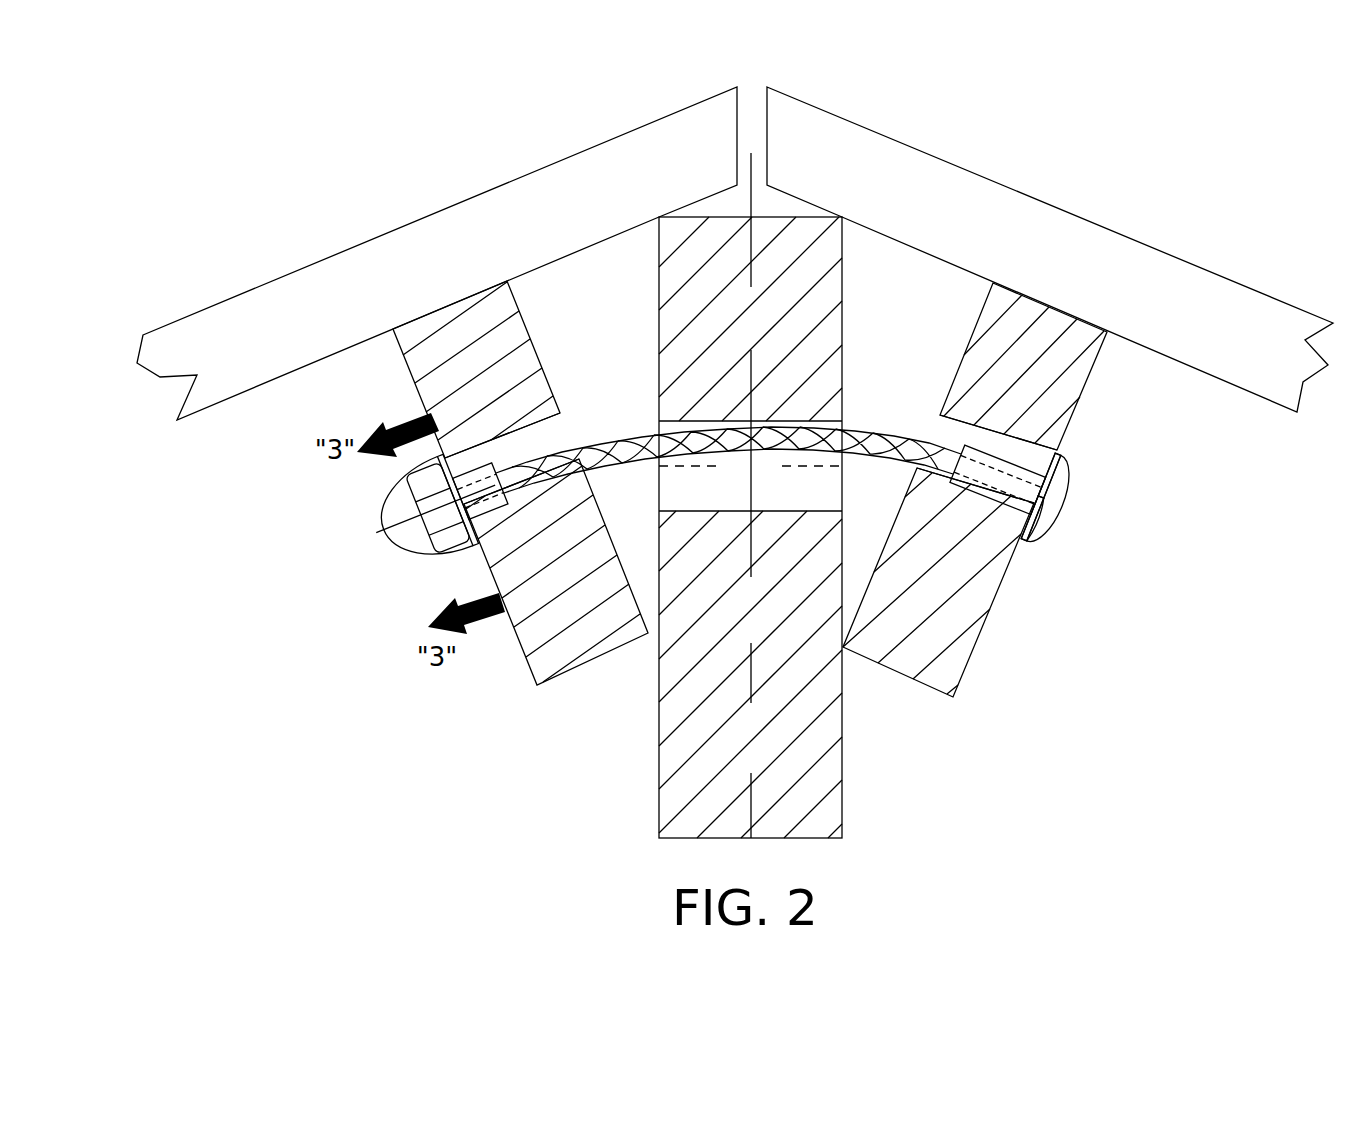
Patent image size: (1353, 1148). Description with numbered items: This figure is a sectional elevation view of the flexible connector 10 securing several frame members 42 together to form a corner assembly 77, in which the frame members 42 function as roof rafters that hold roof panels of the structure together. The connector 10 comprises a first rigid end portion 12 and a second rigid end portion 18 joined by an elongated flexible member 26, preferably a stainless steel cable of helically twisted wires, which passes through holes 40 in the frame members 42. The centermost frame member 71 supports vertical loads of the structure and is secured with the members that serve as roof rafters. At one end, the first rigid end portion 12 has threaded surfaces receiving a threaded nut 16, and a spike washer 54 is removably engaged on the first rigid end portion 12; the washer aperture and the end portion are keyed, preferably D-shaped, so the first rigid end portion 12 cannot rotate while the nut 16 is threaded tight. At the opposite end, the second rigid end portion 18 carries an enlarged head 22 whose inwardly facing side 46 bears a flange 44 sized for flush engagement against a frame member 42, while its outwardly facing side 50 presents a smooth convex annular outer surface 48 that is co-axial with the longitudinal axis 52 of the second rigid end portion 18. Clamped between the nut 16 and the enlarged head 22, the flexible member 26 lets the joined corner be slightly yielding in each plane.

The flexible connector 10 is at (303, 530).
The first rigid end portion 12 is at (530, 457).
The threaded nut 16 is at (400, 535).
The second rigid end portion 18 is at (993, 477).
The enlarged head 22 is at (1050, 532).
The elongated flexible member 26 is at (857, 437).
The holes 40 is at (707, 485).
The frame members 42 is at (462, 368).
The flange 44 is at (1020, 528).
The inwardly facing side 46 is at (1020, 543).
The smooth convex annular outer surface 48 is at (1043, 548).
The outwardly facing side 50 is at (1050, 478).
The longitudinal axis 52 is at (1063, 515).
The spike washer 54 is at (467, 543).
The centermost frame member 71 is at (712, 255).
The corner assembly 77 is at (500, 815).